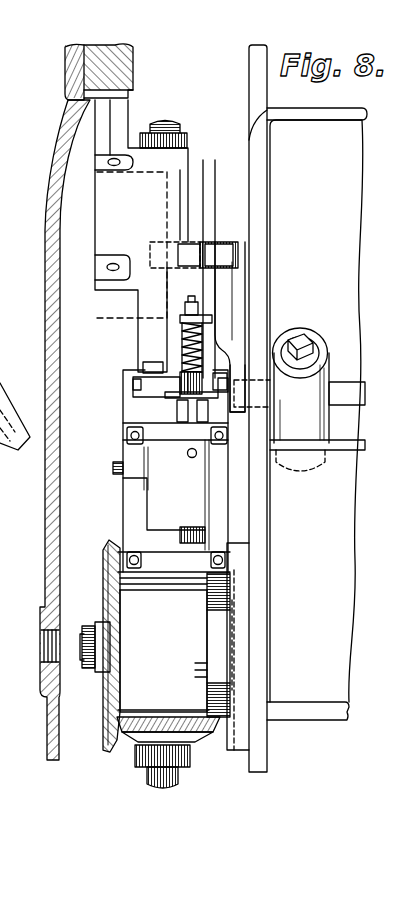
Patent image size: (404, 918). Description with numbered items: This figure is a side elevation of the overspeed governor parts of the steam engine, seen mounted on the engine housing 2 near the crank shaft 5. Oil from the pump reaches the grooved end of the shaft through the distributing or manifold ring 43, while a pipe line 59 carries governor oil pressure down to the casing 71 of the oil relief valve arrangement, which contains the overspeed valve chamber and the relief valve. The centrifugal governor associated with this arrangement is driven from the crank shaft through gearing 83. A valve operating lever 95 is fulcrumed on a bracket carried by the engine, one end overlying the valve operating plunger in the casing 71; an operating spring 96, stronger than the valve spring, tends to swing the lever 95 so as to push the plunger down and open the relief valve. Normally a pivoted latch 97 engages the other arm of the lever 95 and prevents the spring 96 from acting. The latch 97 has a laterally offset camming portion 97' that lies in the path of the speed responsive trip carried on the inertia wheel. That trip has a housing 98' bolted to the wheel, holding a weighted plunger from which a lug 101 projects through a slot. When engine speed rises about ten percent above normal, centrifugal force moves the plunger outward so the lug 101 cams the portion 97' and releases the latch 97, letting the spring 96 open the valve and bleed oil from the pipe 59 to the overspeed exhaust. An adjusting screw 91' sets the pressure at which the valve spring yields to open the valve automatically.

The housing 2 is at (52, 152).
The crank shaft 5 is at (0, 616).
The distributing or manifold ring 43 is at (167, 613).
The pipe line 59 is at (192, 458).
The casing 71 is at (162, 502).
The gearing 83 is at (133, 740).
The adjusting screw 91' is at (175, 539).
The valve operating lever 95 is at (212, 298).
The operating spring 96 is at (182, 344).
The latch 97 is at (264, 305).
The camming portion 97' is at (269, 346).
The trip housing 98' is at (332, 399).
The lug 101 is at (247, 387).